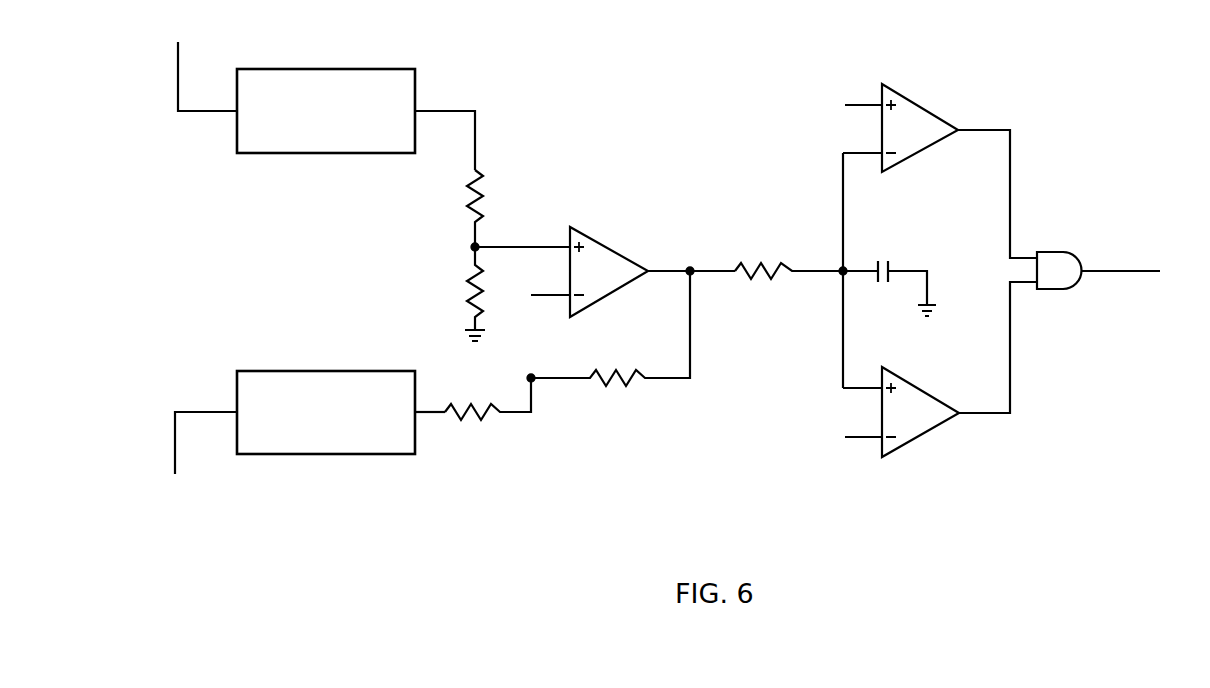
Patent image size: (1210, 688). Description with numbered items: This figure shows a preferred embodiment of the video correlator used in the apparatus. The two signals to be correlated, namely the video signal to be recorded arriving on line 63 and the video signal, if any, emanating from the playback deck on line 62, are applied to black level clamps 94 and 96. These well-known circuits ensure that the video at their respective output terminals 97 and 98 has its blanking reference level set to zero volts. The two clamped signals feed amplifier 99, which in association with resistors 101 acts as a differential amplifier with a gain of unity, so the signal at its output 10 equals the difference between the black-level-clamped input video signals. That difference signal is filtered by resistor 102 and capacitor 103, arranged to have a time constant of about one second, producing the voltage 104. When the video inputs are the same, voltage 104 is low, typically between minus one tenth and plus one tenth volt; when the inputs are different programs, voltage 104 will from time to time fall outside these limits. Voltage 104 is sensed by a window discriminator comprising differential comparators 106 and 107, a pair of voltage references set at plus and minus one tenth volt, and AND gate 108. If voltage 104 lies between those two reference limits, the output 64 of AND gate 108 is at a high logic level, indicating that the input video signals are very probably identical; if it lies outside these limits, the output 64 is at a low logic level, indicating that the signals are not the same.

The output node of summing amplifier 10 is at (696, 266).
The line 62 is at (175, 445).
The line 63 is at (178, 70).
The output signal 64 is at (1142, 270).
The black level clamp 94 is at (330, 69).
The black level clamp 96 is at (322, 371).
The output terminal 97 is at (474, 110).
The output terminal 98 is at (418, 416).
The amplifier 99 is at (607, 243).
The resistors 101 is at (482, 188).
The resistor 102 is at (746, 278).
The capacitor 103 is at (878, 262).
The voltage 104 is at (840, 269).
The differential comparator 106 is at (924, 106).
The differential comparator 107 is at (913, 428).
The AND gate 108 is at (1076, 252).